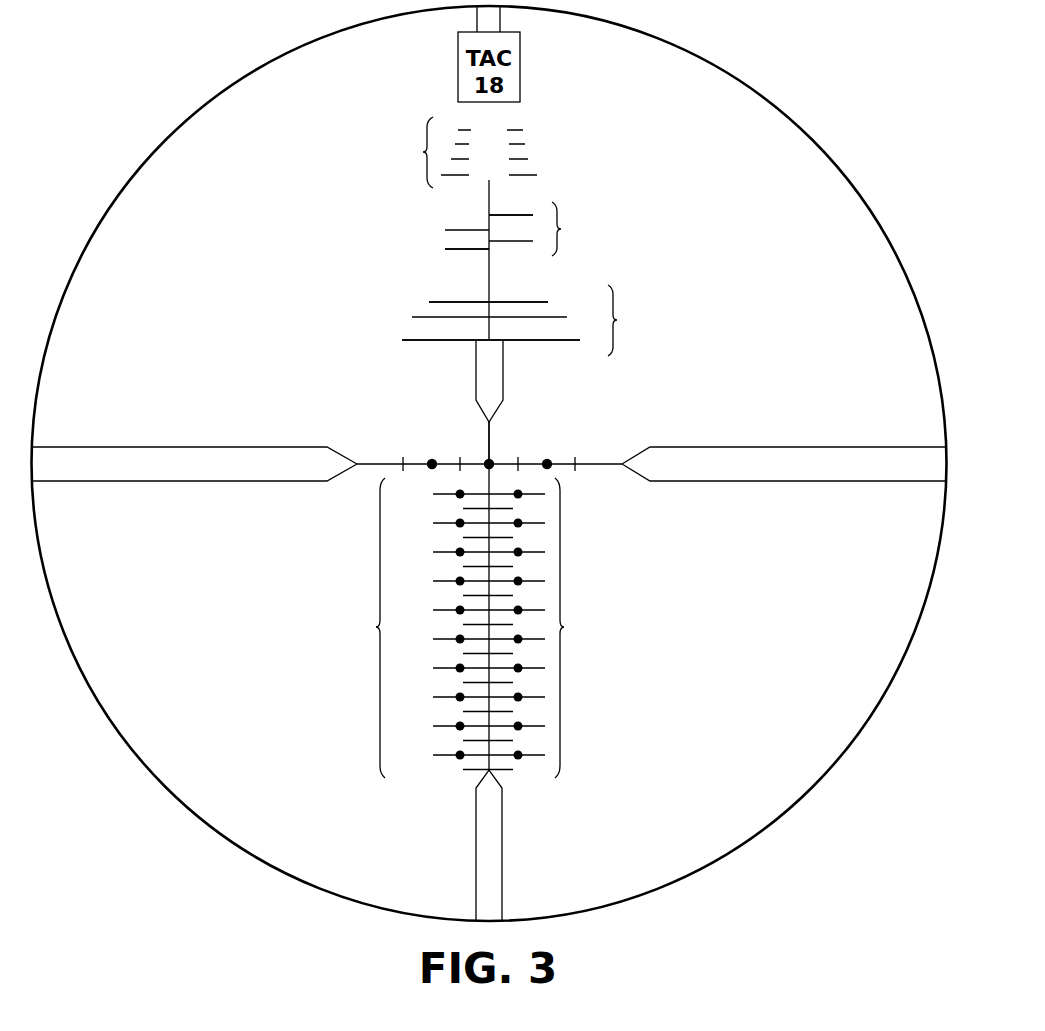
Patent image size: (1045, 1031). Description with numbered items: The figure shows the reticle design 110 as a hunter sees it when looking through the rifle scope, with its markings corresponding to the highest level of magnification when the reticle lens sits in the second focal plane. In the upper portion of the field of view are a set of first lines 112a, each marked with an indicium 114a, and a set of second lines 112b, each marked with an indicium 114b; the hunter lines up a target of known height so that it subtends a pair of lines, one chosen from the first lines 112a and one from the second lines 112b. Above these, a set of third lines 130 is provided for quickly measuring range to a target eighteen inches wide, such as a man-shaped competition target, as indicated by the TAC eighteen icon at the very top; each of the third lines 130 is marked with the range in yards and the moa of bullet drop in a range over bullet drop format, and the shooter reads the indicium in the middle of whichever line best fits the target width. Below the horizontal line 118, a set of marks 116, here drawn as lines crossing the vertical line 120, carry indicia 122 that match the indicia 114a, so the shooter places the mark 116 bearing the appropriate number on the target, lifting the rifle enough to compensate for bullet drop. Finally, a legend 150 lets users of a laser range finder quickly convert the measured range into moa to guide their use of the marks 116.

The reticle design 110 is at (803, 90).
The set of third lines 130 is at (424, 152).
The set of first lines 112a is at (562, 229).
The indicium 114a is at (541, 207).
The set of second lines 112b is at (618, 320).
The indicium 114b is at (567, 298).
The vertical line 120 is at (489, 440).
The horizontal line 118 is at (550, 458).
The legend 150 is at (777, 447).
The indicia 122 is at (380, 552).
The set of marks 116 is at (564, 627).